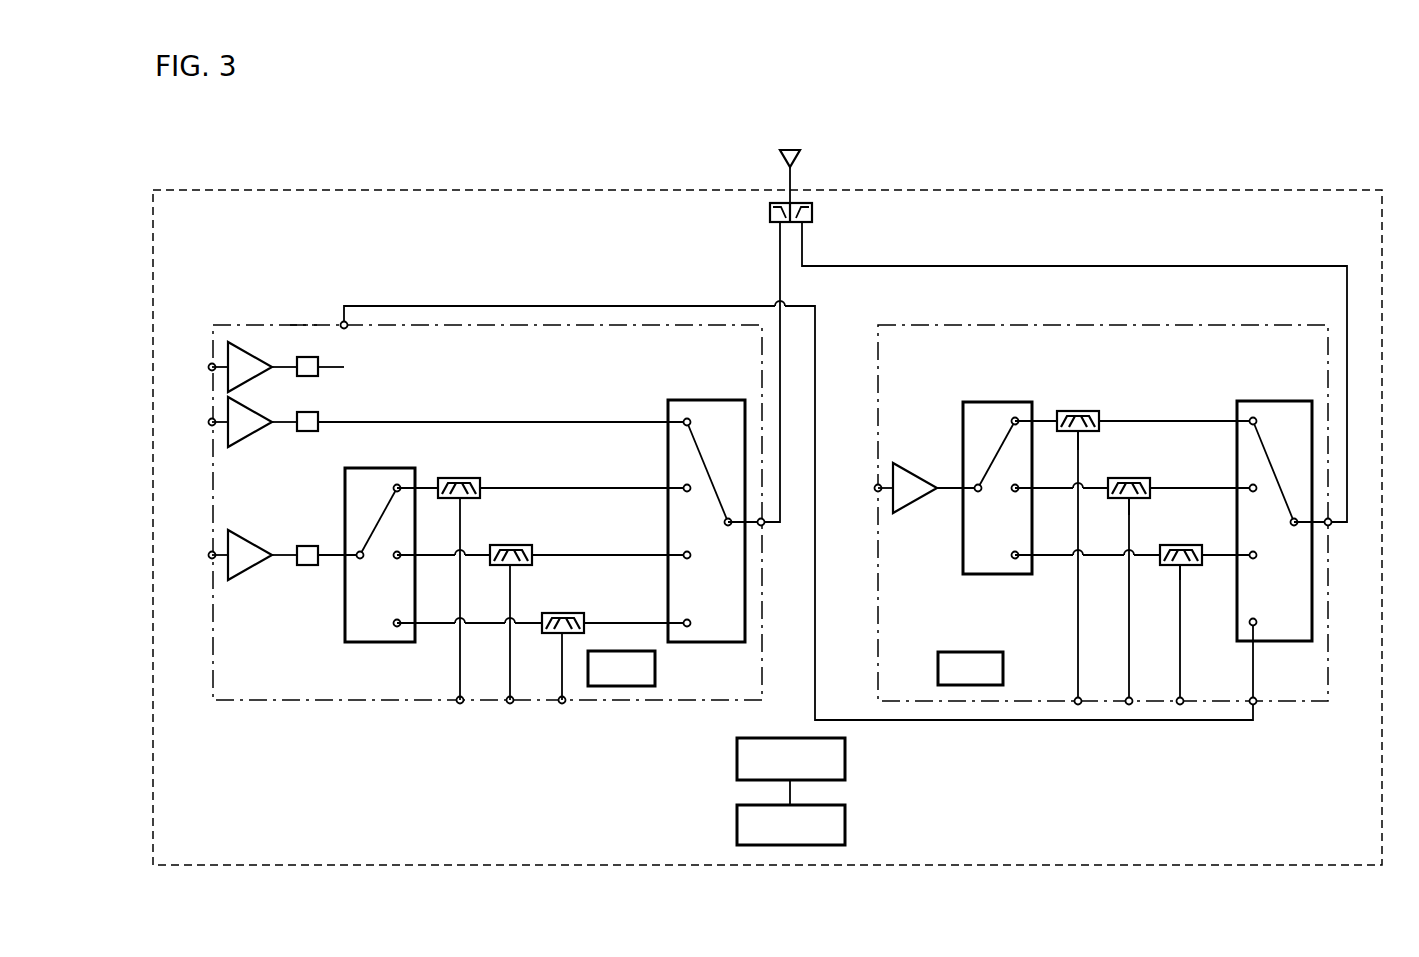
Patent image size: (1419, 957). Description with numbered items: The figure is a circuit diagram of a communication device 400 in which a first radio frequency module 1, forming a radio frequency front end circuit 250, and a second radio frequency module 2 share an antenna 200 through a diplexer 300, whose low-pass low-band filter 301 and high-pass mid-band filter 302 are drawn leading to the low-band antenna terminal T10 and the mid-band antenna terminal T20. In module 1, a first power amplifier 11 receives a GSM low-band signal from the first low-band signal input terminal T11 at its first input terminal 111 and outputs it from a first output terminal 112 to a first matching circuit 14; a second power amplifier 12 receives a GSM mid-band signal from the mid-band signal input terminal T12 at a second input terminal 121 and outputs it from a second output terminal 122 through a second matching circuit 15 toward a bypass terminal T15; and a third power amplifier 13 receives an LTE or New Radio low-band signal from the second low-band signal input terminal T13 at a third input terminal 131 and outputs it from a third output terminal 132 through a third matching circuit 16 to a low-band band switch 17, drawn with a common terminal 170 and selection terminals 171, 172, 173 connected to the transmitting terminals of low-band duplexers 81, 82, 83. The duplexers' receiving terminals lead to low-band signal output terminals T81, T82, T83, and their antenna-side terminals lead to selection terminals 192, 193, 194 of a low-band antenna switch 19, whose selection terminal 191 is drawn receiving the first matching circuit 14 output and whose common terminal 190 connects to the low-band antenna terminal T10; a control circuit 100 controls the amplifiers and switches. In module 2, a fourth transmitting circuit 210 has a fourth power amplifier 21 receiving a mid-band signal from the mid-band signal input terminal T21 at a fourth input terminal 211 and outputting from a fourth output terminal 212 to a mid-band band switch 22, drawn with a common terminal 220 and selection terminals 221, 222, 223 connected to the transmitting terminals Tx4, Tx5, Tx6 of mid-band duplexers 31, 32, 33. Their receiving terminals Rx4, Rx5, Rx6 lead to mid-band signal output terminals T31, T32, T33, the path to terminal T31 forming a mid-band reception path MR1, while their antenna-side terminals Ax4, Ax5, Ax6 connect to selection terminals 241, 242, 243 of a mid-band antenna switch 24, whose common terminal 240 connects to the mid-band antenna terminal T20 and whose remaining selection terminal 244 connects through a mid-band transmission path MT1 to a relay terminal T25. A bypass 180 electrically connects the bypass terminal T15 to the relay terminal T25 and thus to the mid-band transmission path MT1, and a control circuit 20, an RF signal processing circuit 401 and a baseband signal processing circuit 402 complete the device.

The radio frequency module 1 is at (283, 325).
The second radio frequency module 2 is at (898, 325).
The first power amplifier 11 is at (232, 446).
The second power amplifier 12 is at (240, 357).
The third power amplifier 13 is at (255, 548).
The first matching circuit 14 is at (316, 432).
The second matching circuit 15 is at (318, 377).
The third matching circuit 16 is at (310, 566).
The low-band band switch 17 is at (345, 623).
The low-band antenna switch 19 is at (712, 400).
The control circuit 20 is at (997, 671).
The fourth power amplifier 21 is at (910, 498).
The mid-band band switch 22 is at (962, 408).
The mid-band antenna switch 24 is at (1278, 401).
The mid-band duplexer 31 is at (1078, 411).
The mid-band duplexer 32 is at (1128, 478).
The mid-band duplexer 33 is at (1180, 545).
The low-band duplexer 81 is at (470, 479).
The low-band duplexer 82 is at (510, 545).
The low-band duplexer 83 is at (565, 613).
The control circuit 100 is at (648, 670).
The first input terminal 111 is at (225, 418).
The first output terminal 112 is at (268, 428).
The second input terminal 121 is at (225, 360).
The second output terminal 122 is at (265, 372).
The third input terminal 131 is at (225, 551).
The third output terminal 132 is at (268, 562).
The common terminal of switch 17 170 is at (357, 553).
The selection terminal 171 is at (399, 485).
The selection terminal 172 is at (396, 559).
The selection terminal 173 is at (397, 627).
The bypass 180 is at (515, 306).
The common terminal 190 is at (725, 526).
The selection terminal 191 is at (685, 418).
The selection terminal 192 is at (683, 486).
The selection terminal 193 is at (683, 553).
The selection terminal 194 is at (700, 612).
The antenna 200 is at (794, 150).
The fourth transmitting circuit 210 is at (897, 438).
The fourth input terminal 211 is at (890, 484).
The fourth output terminal 212 is at (939, 495).
The common terminal of switch 22 220 is at (975, 485).
The selection terminal 221 is at (1015, 417).
The selection terminal 222 is at (1014, 492).
The selection terminal 223 is at (1014, 559).
The common terminal 240 is at (1293, 526).
The selection terminal 241 is at (1250, 419).
The selection terminal 242 is at (1253, 492).
The selection terminal 243 is at (1253, 559).
The selection terminal 244 is at (1257, 621).
The radio frequency front end circuit 250 is at (303, 325).
The diplexer 300 is at (766, 239).
The low-band filter 301 is at (769, 214).
The mid-band filter 302 is at (813, 214).
The communication device 400 is at (1130, 190).
The RF signal processing circuit 401 is at (841, 757).
The baseband signal processing circuit 402 is at (840, 828).
The low-band antenna terminal T10 is at (763, 526).
The first low-band signal input terminal T11 is at (210, 425).
The mid-band signal input terminal T12 is at (209, 367).
The second low-band signal input terminal T13 is at (210, 558).
The bypass terminal T15 is at (346, 328).
The mid-band antenna terminal T20 is at (1330, 526).
The mid-band signal input terminal T21 is at (876, 491).
The relay terminal T25 is at (1256, 699).
The mid-band signal output terminal T31 is at (1076, 704).
The mid-band signal output terminal T32 is at (1128, 704).
The mid-band signal output terminal T33 is at (1181, 704).
The low-band signal output terminal T81 is at (458, 703).
The low-band signal output terminal T82 is at (509, 703).
The low-band signal output terminal T83 is at (563, 703).
The transmitting terminal Tx4 is at (1052, 416).
The receiving terminal Rx4 is at (1072, 433).
The antenna-side terminal Ax4 is at (1101, 416).
The transmitting terminal Tx5 is at (1108, 499).
The receiving terminal Rx5 is at (1133, 499).
The antenna-side terminal Ax5 is at (1152, 485).
The transmitting terminal Tx6 is at (1158, 564).
The receiving terminal Rx6 is at (1182, 565).
The antenna-side terminal Ax6 is at (1200, 549).
The mid-band reception path MR1 is at (1078, 628).
The mid-band transmission path MT1 is at (1252, 658).